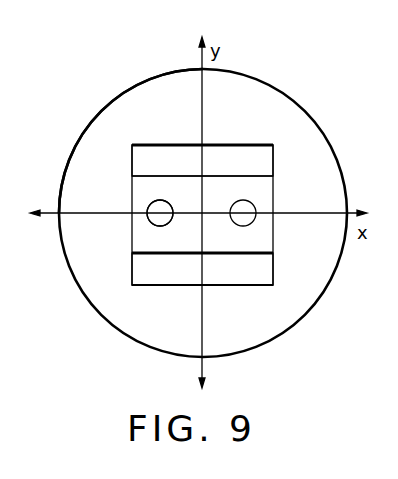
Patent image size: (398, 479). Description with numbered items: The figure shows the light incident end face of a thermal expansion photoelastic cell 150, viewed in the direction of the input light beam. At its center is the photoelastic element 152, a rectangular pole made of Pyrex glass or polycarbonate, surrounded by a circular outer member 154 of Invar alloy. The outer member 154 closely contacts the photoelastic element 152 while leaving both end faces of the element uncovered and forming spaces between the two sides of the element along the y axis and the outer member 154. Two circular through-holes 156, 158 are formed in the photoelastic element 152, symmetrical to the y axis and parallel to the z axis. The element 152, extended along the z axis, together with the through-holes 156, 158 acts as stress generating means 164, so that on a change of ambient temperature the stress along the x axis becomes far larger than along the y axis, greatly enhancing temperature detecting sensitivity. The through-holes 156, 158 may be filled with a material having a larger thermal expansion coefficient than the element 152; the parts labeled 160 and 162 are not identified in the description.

The thermal expansion photoelastic cell 150 is at (282, 91).
The photoelastic element 152 is at (138, 220).
The outer member 154 is at (97, 143).
The circular through-hole 156 is at (146, 221).
The circular through-hole 158 is at (243, 222).
The upper bar 160 is at (155, 155).
The lower bar 162 is at (150, 277).
The stress generating means 164 is at (277, 161).